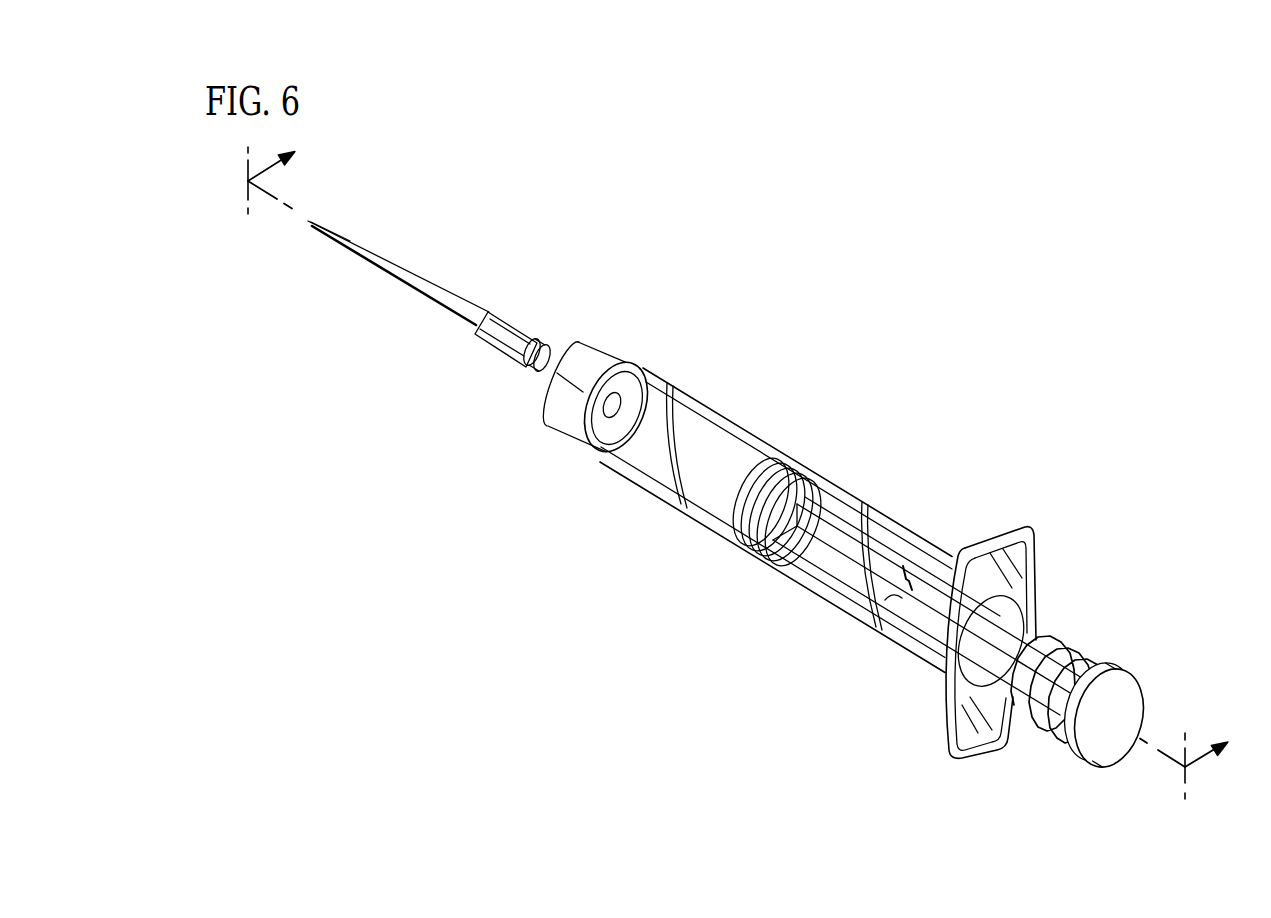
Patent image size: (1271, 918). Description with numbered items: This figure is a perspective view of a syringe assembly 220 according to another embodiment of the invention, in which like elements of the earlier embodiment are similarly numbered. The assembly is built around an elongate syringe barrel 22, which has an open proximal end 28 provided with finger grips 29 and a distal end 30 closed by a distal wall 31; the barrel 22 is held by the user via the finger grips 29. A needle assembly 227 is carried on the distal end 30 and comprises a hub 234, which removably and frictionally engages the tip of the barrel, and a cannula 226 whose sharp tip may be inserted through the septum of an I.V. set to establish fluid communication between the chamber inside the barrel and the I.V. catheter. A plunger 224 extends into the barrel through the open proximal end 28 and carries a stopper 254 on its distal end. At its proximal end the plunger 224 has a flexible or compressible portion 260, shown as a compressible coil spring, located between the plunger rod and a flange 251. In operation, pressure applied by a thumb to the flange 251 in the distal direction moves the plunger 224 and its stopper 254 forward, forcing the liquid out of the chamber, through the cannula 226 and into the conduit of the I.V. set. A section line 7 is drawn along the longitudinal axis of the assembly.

The section line 7- 7 is at (728, 473).
The barrel 22 is at (772, 440).
The open proximal end 28 is at (945, 660).
The finger grips 29 is at (1010, 528).
The distal end 30 is at (600, 455).
The distal wall 31 is at (651, 362).
The barrel body 220 is at (657, 514).
The plunger 224 is at (901, 565).
The cannula 226 is at (384, 266).
The needle hub 227 is at (518, 307).
The hub collar 234 is at (508, 353).
The flange 251 is at (1132, 698).
The stopper 254 is at (735, 518).
The compressible portion 260 is at (1053, 732).